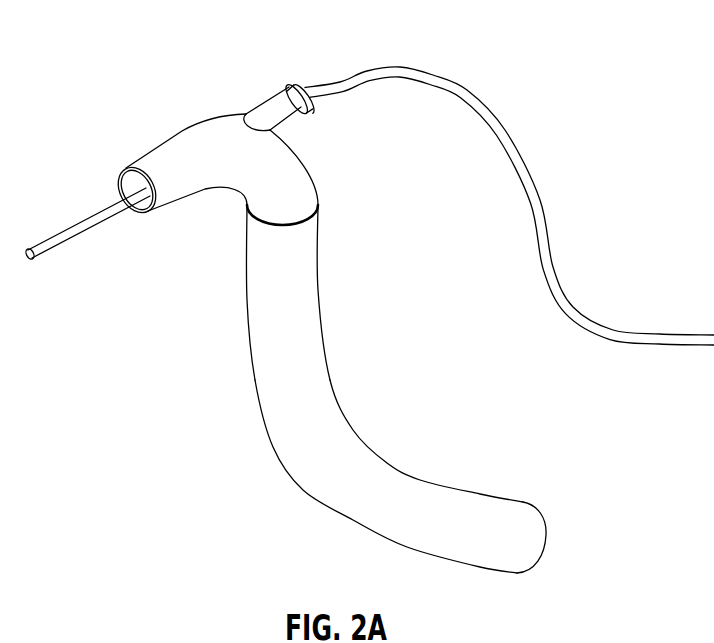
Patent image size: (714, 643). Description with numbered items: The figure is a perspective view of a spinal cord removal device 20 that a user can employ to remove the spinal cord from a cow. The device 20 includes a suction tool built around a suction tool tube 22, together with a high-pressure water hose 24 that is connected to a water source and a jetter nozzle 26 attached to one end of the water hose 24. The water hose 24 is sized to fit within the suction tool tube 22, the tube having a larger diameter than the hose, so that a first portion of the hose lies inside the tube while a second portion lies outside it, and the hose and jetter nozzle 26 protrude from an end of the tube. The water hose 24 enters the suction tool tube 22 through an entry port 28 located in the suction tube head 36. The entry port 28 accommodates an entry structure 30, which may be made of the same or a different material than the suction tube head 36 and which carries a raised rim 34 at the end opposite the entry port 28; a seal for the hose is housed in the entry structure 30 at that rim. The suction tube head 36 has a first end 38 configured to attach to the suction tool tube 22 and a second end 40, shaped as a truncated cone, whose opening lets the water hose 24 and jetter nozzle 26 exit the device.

The device 20 is at (627, 96).
The suction tool tube 22 is at (535, 535).
The high-pressure water hose 24 is at (367, 69).
The jetter nozzle 26 is at (38, 259).
The entry port 28 is at (242, 115).
The entry structure 30 is at (271, 97).
The raised rim 34 is at (295, 82).
The suction tube head 36 is at (165, 160).
The first end 38 is at (247, 209).
The second end 40 is at (127, 169).